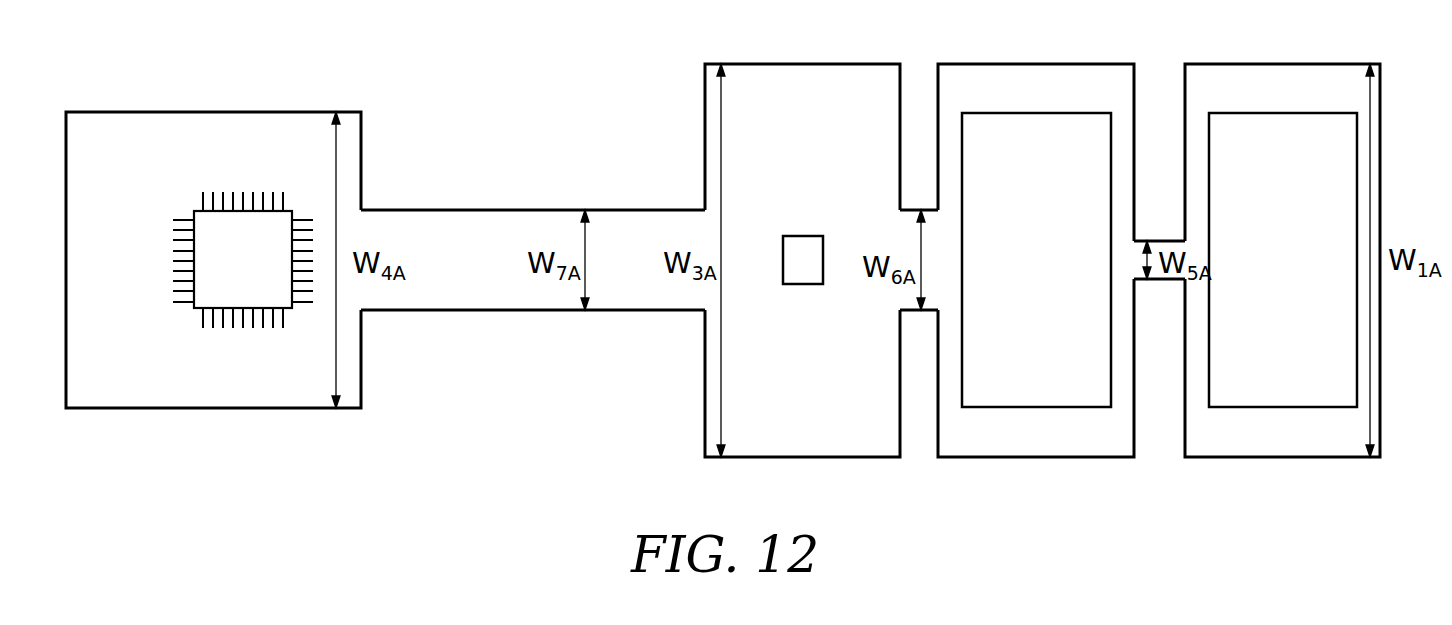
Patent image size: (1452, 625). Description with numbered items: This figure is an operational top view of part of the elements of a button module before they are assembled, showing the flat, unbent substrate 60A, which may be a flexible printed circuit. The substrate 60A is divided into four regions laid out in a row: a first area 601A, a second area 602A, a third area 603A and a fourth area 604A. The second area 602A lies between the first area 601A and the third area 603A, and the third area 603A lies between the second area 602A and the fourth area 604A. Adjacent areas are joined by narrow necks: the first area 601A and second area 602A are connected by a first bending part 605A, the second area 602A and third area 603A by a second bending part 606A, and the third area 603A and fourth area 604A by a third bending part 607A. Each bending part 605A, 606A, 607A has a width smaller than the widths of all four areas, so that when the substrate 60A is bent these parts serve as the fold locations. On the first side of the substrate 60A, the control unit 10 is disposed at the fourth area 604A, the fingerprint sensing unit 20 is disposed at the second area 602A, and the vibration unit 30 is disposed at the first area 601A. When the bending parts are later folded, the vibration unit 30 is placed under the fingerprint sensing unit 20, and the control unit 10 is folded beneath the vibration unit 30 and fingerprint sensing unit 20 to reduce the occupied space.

The substrate 60A is at (257, 78).
The fourth area 604A is at (131, 130).
The third bending part 607A is at (475, 228).
The third area 603A is at (798, 90).
The second bending part 606A is at (908, 300).
The second area 602A is at (1037, 90).
The first bending part 605A is at (1159, 279).
The first area 601A is at (1283, 90).
The control unit 10 is at (205, 295).
The fingerprint sensing unit 20 is at (1038, 392).
The vibration unit 30 is at (1283, 392).